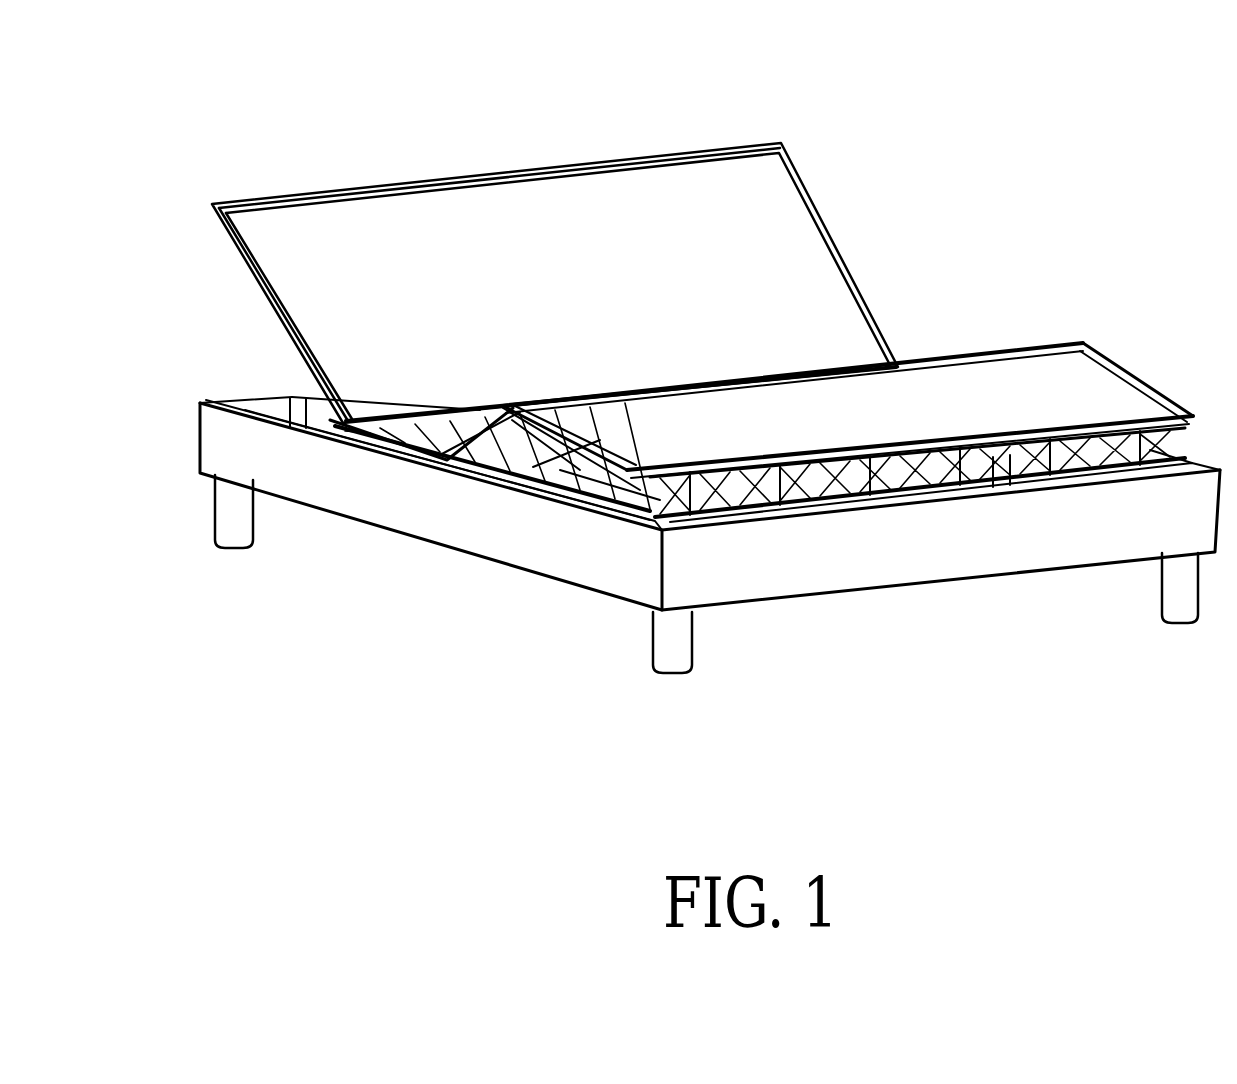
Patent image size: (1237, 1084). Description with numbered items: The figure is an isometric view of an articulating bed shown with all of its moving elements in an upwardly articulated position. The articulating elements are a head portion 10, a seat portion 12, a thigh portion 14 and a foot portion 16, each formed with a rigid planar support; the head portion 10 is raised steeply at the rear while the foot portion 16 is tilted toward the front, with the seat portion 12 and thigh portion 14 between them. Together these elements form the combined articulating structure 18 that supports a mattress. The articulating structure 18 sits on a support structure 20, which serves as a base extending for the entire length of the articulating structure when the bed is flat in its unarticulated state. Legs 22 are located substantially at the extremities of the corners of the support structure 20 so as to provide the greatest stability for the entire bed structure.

The head portion 10 is at (723, 237).
The seat portion 12 is at (422, 440).
The thigh portion 14 is at (500, 447).
The foot portion 16 is at (1087, 390).
The articulating structure 18 is at (478, 176).
The support structure 20 is at (879, 593).
The legs 22 is at (230, 514).